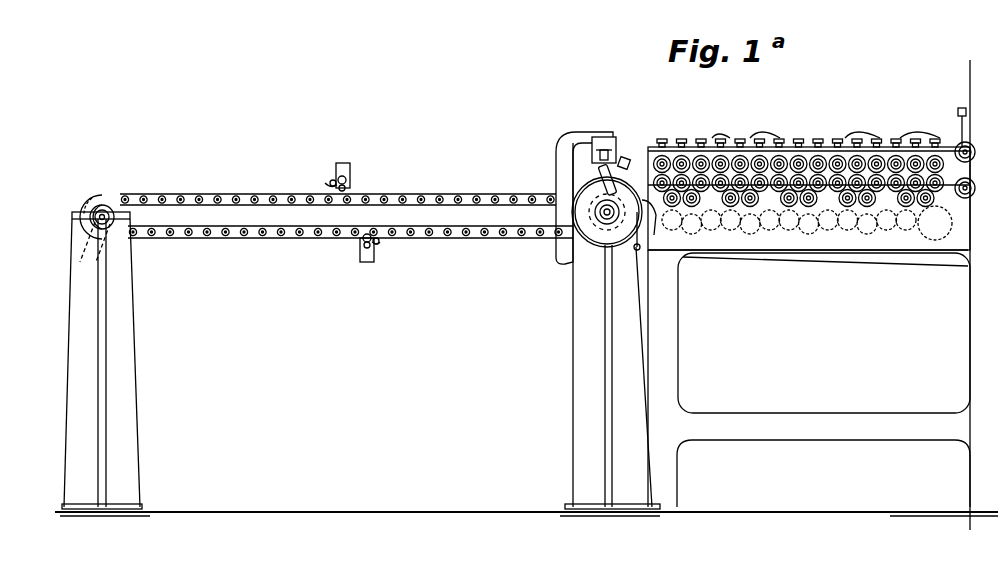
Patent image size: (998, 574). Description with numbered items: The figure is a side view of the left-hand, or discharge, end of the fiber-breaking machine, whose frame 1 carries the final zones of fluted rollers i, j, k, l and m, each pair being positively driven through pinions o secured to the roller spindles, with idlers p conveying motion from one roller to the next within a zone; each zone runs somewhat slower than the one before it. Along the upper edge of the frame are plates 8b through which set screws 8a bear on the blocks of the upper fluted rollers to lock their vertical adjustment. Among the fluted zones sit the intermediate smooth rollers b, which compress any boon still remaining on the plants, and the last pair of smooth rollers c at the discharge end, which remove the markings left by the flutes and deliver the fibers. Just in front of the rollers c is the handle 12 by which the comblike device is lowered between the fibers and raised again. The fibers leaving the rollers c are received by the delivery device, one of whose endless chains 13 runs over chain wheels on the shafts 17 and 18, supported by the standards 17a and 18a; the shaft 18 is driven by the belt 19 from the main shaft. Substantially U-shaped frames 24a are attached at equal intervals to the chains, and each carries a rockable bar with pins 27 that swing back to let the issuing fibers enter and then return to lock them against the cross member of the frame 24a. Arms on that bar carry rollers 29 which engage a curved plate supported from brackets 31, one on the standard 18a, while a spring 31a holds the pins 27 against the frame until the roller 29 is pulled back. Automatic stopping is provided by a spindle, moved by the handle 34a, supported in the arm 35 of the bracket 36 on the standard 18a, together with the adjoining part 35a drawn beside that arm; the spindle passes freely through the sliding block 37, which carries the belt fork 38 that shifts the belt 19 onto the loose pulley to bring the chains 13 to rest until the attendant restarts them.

The frame 1 is at (746, 250).
The handle 12 is at (672, 140).
The endless chain 13 is at (238, 197).
The shaft 17 is at (112, 212).
The standard 17a is at (130, 305).
The shaft 18 is at (607, 216).
The standard 18a is at (580, 312).
The belt 19 is at (662, 250).
The U shaped frame 24a is at (350, 178).
The pin 27 is at (654, 180).
The roller 29 is at (348, 182).
The bracket 31 is at (636, 250).
The spring 31a is at (330, 185).
The handle 34a is at (600, 186).
The arm 35 is at (580, 165).
The frame arm 35a is at (592, 137).
The bracket 36 is at (560, 150).
The sliding block 37 is at (578, 134).
The belt fork 38 is at (668, 214).
The smooth rollers b is at (960, 110).
The smooth rollers c is at (660, 140).
The zone i is at (918, 132).
The zone j is at (862, 132).
The zone k is at (806, 138).
The zone l is at (746, 138).
The zone m is at (706, 138).
The pinion o is at (968, 146).
The idler p is at (808, 239).
The set screw 8a is at (770, 130).
The plate 8b is at (722, 130).